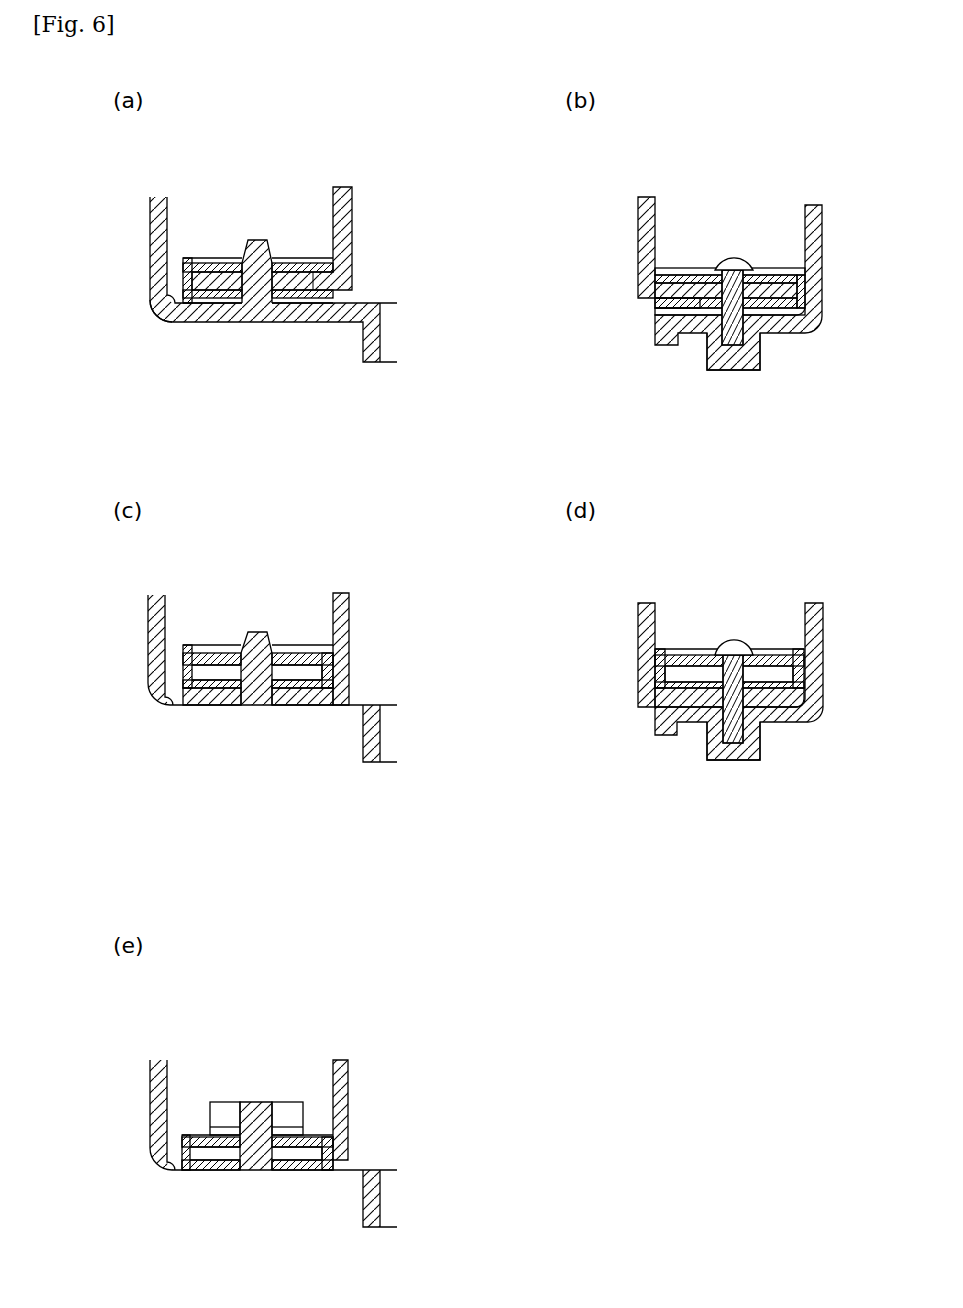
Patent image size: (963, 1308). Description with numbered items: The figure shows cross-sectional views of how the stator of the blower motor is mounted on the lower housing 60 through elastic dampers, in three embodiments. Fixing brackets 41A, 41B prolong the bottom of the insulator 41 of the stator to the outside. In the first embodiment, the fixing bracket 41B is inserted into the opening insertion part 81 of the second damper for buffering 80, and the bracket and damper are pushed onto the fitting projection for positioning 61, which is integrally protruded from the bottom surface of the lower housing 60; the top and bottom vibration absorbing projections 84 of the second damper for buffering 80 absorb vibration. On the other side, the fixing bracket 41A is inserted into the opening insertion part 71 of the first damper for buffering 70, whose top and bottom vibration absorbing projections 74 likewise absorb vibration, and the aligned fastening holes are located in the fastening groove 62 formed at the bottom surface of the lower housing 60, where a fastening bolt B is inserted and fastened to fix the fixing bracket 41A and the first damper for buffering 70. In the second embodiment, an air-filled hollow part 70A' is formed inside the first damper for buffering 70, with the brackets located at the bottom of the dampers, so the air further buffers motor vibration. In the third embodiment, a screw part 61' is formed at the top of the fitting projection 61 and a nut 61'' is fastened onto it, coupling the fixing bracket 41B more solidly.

The insulator 41 is at (352, 214).
The fixing bracket 41A is at (797, 293).
The fixing bracket 41B is at (300, 290).
The lower housing 60 is at (194, 324).
The fitting projection for positioning 61 is at (262, 711).
The screw part 61' is at (243, 1087).
The nut 61'' is at (353, 1105).
The fastening groove 62 is at (758, 335).
The first damper for buffering 70 is at (770, 282).
The hollow part 70A' is at (674, 678).
The opening insertion part 71 is at (657, 305).
The top and bottom vibration absorbing projections 74 is at (683, 270).
The second damper for buffering 80 is at (185, 285).
The opening insertion part 81 is at (323, 286).
The top and bottom vibration absorbing projections 84 is at (163, 318).
The fastening bolt B is at (733, 258).